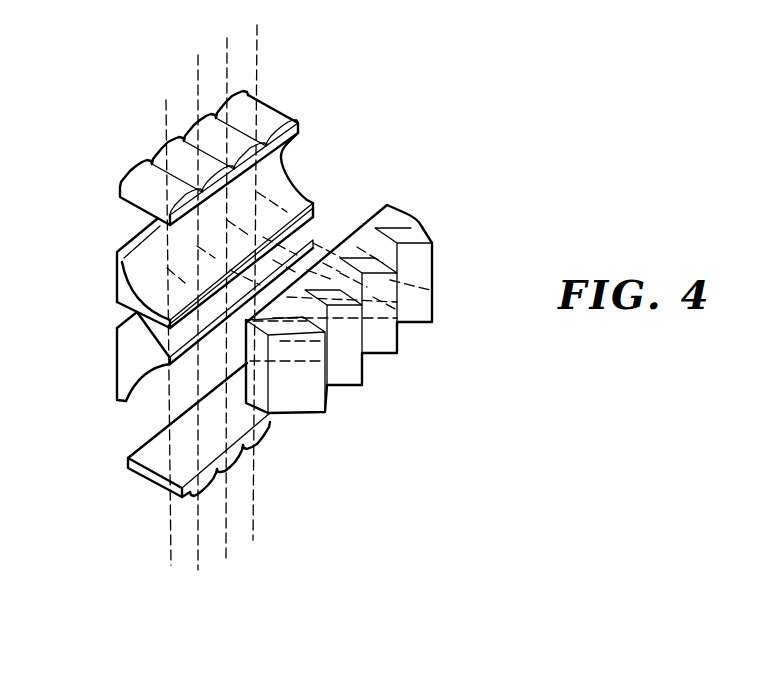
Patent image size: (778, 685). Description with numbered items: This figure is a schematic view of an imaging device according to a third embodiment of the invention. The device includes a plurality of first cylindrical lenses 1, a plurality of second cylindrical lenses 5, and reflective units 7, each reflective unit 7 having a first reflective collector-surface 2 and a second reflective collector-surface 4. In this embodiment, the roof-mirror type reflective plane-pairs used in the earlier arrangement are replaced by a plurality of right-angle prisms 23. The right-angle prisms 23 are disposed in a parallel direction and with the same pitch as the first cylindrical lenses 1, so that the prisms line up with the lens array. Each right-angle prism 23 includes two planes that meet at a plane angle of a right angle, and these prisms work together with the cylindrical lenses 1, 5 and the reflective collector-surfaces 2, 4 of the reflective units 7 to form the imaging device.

The first cylindrical lenses 1 is at (280, 96).
The first reflective collector-surface 2 is at (294, 178).
The second reflective collector-surface 4 is at (142, 382).
The second cylindrical lenses 5 is at (211, 491).
The reflective units 7 is at (116, 277).
The right-angle prisms 23 is at (374, 366).